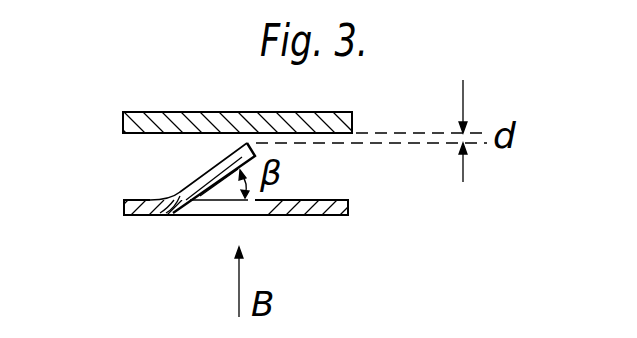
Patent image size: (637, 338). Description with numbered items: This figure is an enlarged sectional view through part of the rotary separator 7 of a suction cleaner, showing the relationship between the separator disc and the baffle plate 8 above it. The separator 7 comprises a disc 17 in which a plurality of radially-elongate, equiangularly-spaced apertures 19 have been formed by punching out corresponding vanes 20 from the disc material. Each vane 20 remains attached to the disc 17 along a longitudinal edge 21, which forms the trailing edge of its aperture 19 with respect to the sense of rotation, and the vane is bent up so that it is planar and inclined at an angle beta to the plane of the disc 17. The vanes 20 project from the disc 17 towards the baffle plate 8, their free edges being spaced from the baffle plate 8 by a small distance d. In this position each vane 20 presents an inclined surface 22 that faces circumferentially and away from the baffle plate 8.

The rotary separator 7 is at (241, 221).
The baffle plate 8 is at (180, 111).
The disc 17 is at (130, 215).
The apertures 19 is at (256, 213).
The vanes 20 is at (205, 175).
The longitudinal edge 21 is at (175, 217).
The inclined surfaces 22 is at (225, 187).